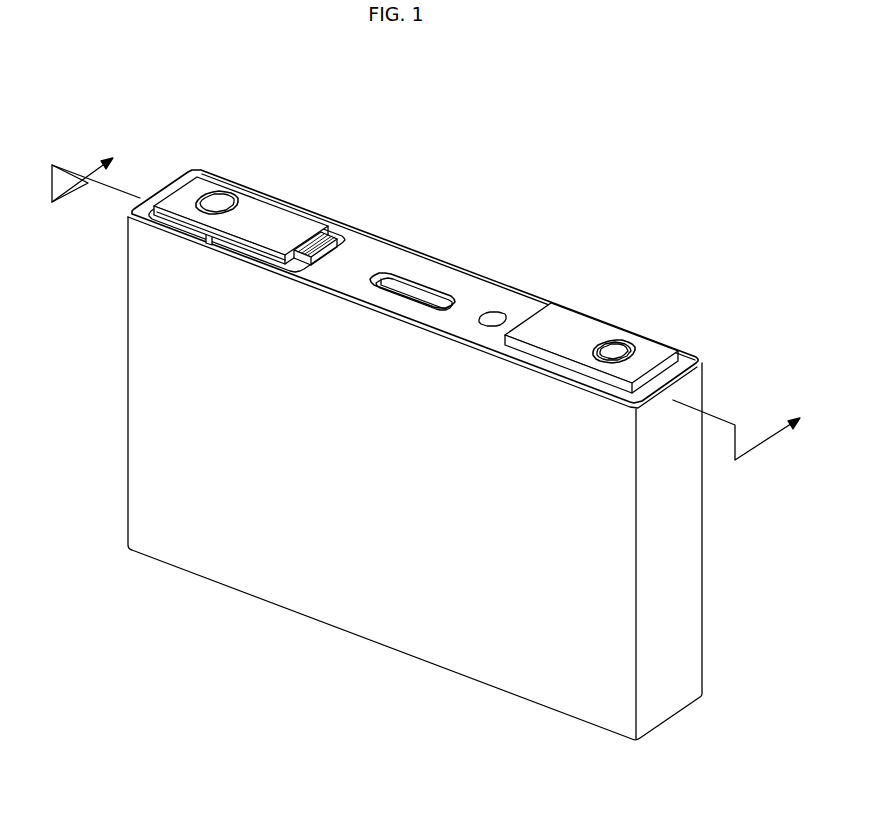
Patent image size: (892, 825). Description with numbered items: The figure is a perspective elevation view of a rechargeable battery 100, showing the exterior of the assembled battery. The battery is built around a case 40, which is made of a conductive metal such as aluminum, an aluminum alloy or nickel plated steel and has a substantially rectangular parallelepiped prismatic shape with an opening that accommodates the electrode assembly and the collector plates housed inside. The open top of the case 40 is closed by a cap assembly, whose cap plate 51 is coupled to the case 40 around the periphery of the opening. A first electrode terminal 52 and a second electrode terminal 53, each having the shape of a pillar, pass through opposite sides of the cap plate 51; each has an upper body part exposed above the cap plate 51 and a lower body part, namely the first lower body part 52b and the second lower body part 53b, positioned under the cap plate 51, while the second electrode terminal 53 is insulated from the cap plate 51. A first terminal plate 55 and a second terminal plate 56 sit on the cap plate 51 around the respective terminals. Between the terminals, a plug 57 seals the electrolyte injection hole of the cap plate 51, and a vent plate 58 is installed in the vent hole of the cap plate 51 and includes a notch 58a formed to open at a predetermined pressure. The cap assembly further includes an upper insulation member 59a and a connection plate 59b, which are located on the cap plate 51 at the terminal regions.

The rechargeable battery 100 is at (436, 406).
The case 40 is at (367, 607).
The cap plate 51 is at (449, 281).
The first electrode terminal 52 is at (618, 322).
The first lower body part 52b is at (647, 351).
The second electrode terminal 53 is at (247, 191).
The second lower body part 53b is at (232, 190).
The first terminal plate 55 is at (578, 318).
The second terminal plate 56 is at (278, 215).
The plug 57 is at (500, 316).
The vent plate 58 is at (427, 244).
The notch 58a is at (399, 283).
The upper insulation member 59a is at (349, 224).
The connection plate 59b is at (703, 352).